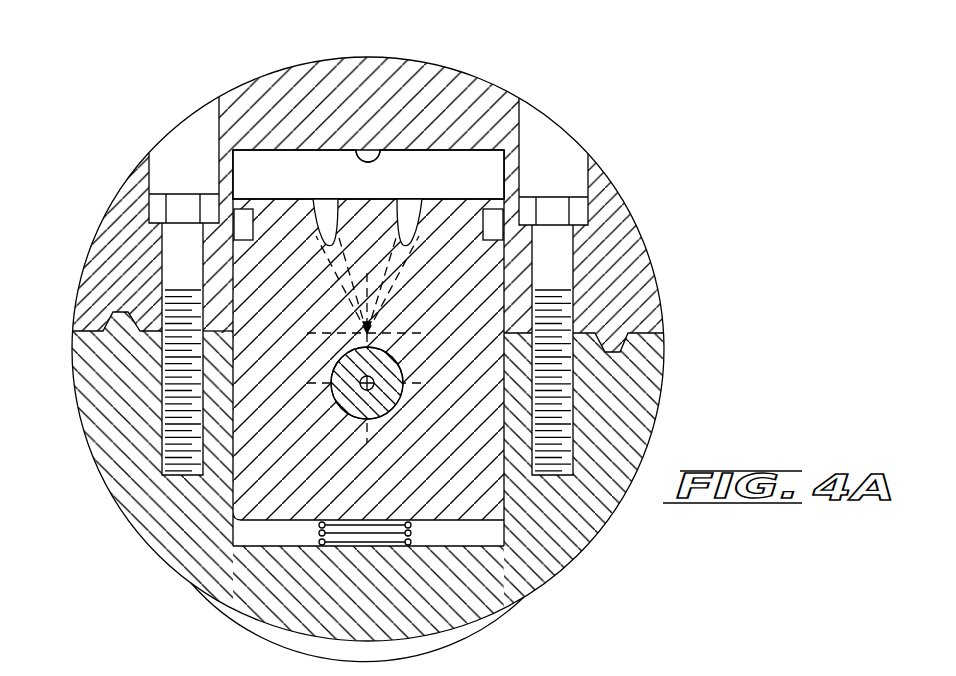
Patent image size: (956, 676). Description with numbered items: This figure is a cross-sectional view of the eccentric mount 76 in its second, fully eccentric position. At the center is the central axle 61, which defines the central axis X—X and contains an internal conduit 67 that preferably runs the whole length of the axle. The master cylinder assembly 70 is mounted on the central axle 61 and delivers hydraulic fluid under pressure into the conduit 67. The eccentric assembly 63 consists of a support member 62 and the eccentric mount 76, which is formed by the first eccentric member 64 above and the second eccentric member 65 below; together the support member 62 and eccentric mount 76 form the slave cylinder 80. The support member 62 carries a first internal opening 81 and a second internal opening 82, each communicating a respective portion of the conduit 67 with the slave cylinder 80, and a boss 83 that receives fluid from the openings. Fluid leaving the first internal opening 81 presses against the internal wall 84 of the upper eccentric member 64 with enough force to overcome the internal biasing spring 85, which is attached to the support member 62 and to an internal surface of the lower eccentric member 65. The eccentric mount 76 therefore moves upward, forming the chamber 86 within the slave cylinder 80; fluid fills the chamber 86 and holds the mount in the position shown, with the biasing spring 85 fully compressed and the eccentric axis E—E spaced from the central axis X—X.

The central axle 61 is at (333, 357).
The support member 62 is at (506, 275).
The eccentric assembly 63 is at (375, 338).
The first eccentric member 64 is at (540, 107).
The second eccentric member 65 is at (594, 532).
The internal conduit 67 is at (371, 386).
The master cylinder assembly 70 is at (494, 628).
The eccentric mount 76 is at (118, 438).
The slave cylinder 80 is at (233, 269).
The first internal opening 81 is at (322, 206).
The second internal opening 82 is at (414, 206).
The boss 83 is at (292, 207).
The internal wall 84 is at (376, 145).
The internal biasing spring 85 is at (318, 547).
The chamber 86 is at (478, 176).